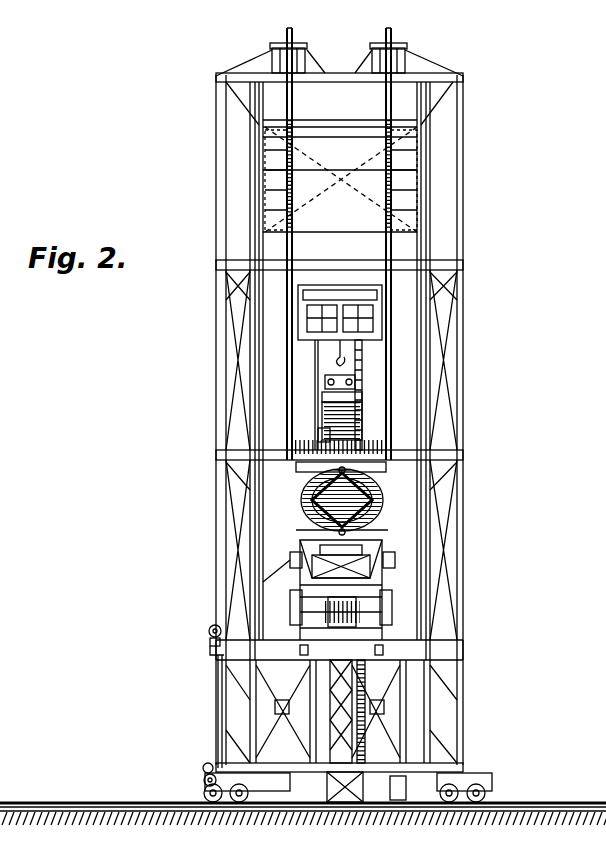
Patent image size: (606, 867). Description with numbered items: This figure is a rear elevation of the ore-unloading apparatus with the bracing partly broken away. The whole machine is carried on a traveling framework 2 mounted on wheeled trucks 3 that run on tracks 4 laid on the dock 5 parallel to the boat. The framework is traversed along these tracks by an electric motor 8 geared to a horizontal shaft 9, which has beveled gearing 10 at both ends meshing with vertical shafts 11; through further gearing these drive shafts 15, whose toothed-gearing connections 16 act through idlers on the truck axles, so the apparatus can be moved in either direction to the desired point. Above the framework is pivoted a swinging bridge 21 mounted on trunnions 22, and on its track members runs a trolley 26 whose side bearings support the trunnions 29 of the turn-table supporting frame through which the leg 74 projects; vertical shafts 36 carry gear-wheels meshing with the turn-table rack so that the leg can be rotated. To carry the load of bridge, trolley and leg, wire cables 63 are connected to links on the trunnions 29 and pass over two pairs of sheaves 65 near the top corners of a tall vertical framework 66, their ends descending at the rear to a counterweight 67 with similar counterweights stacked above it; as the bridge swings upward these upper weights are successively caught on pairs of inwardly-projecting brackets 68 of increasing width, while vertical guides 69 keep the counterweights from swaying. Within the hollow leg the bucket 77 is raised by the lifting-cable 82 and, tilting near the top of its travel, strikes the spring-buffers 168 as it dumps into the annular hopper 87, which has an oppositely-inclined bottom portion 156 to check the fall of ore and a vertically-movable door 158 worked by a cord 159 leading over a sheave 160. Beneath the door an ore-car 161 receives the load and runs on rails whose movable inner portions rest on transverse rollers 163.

The sheaves 65 is at (406, 34).
The wire cables 63 is at (475, 112).
The counterweight 67 is at (340, 176).
The vertical strips or guides 69 is at (380, 285).
The inwardly-projecting brackets 68 is at (262, 580).
The vertical framework 66 is at (452, 340).
The lifting-cable 82 is at (338, 347).
The spring-buffers 168 is at (326, 378).
The bucket 77 is at (350, 392).
The vertical shafts 36 is at (360, 420).
The leg 74 is at (420, 784).
The hopper 87 is at (318, 478).
The sheave 160 is at (352, 482).
The oppositely-inclined bottom portion 156 is at (312, 506).
The cord 159 is at (362, 518).
The trunnions 29 is at (390, 552).
The trolley 26 is at (378, 573).
The vertically-movable door 158 is at (335, 556).
The swinging bridge 21 is at (232, 668).
The trunnions 22 is at (405, 612).
The transverse rollers 163 is at (340, 614).
The ore-car 161 is at (342, 618).
The traveling framework 2 is at (341, 702).
The vertical shafts 11 is at (218, 710).
The electric motor 8 is at (210, 627).
The horizontal shaft 9 is at (209, 634).
The beveled gearing 10 is at (210, 648).
The shafts 15 is at (204, 764).
The toothed-gearing connections 16 is at (204, 781).
The wheeled trucks 3 is at (497, 780).
The tracks 4 is at (556, 801).
The dock 5 is at (264, 831).